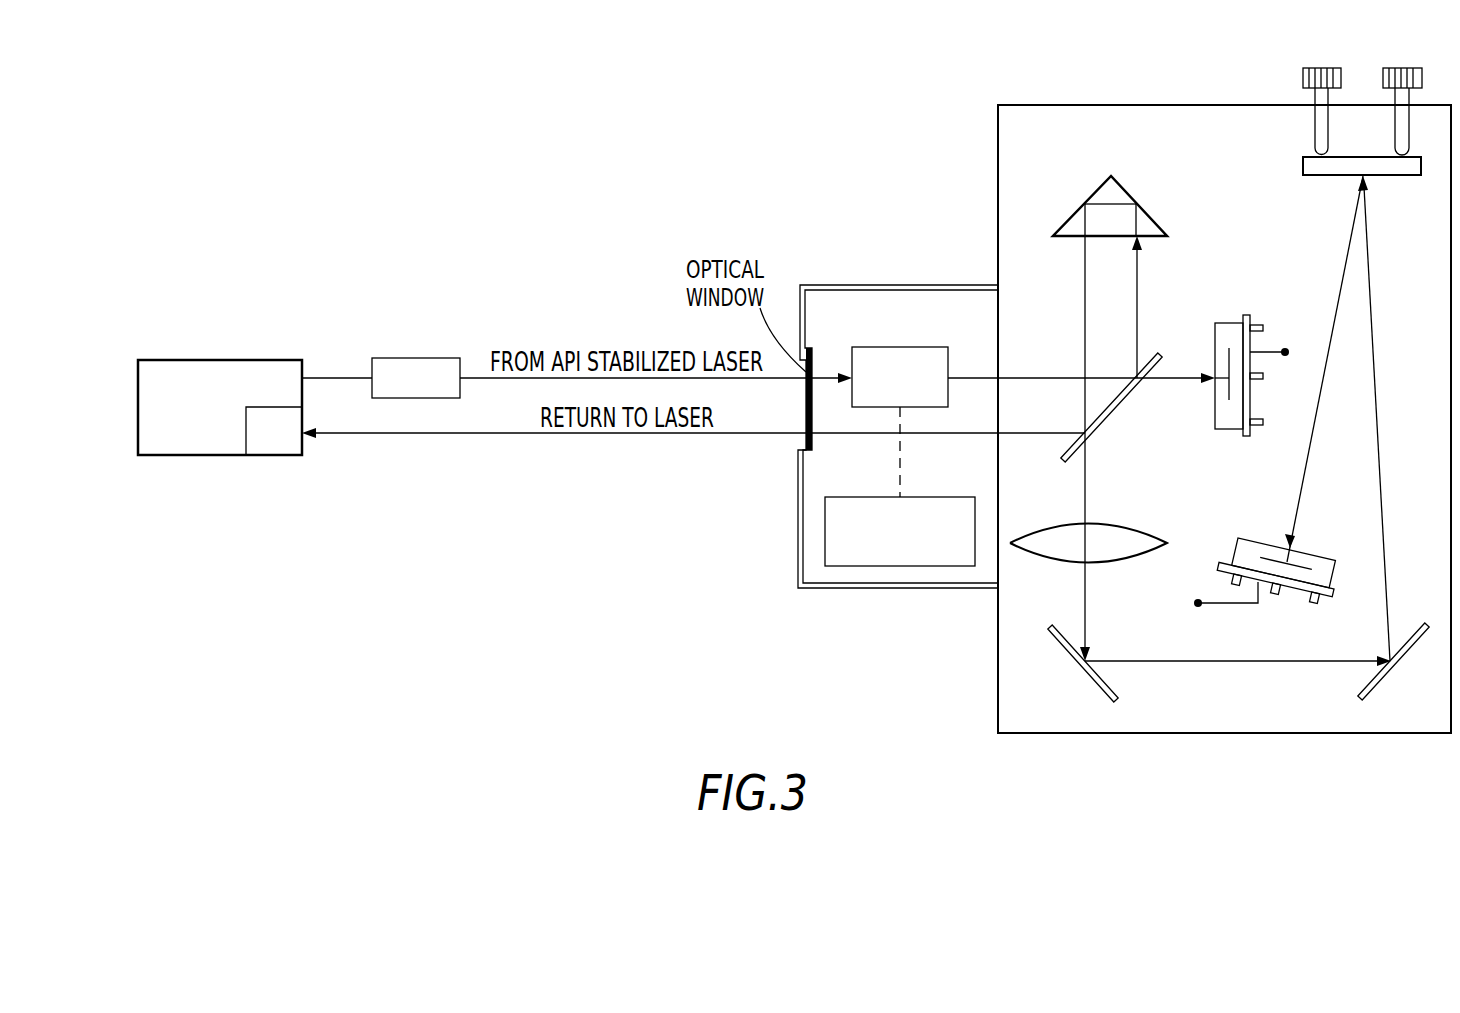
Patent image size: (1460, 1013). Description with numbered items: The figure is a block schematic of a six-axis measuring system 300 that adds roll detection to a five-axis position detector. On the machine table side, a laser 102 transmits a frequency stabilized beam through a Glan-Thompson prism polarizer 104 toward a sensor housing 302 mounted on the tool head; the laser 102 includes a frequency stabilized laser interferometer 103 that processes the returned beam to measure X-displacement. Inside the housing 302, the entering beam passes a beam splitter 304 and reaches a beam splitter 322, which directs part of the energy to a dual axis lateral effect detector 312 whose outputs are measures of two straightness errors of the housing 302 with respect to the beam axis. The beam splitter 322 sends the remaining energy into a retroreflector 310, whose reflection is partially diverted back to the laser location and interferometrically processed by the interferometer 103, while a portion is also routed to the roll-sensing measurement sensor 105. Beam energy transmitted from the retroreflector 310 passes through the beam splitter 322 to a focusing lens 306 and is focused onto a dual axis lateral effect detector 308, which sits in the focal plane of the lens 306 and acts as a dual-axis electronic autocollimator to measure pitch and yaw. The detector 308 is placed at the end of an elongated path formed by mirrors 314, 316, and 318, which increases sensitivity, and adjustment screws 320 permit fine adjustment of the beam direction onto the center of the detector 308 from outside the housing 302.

The six-axis measuring system 300 is at (614, 216).
The laser 102 is at (200, 360).
The frequency stabilized laser interferometer 103 is at (274, 444).
The Glan-Thompson prism polarizer 104 is at (404, 358).
The measurement sensor 105 is at (874, 497).
The sensor housing 302 is at (996, 678).
The beam splitter 304 is at (886, 347).
The focusing lens 306 is at (1068, 522).
The dual axis lateral effect detector 308 is at (1305, 548).
The retroreflector 310 is at (1145, 209).
The dual axis lateral effect detector 312 is at (1230, 322).
The mirror 314 is at (1083, 671).
The mirror 316 is at (1384, 673).
The mirror 318 is at (1385, 176).
The adjustment screws 320 is at (1400, 68).
The beam splitter 322 is at (1092, 441).